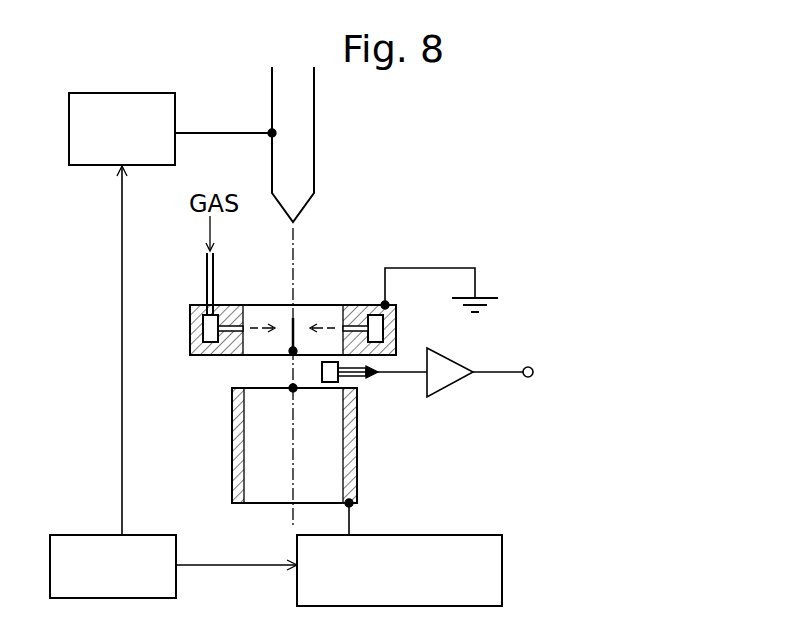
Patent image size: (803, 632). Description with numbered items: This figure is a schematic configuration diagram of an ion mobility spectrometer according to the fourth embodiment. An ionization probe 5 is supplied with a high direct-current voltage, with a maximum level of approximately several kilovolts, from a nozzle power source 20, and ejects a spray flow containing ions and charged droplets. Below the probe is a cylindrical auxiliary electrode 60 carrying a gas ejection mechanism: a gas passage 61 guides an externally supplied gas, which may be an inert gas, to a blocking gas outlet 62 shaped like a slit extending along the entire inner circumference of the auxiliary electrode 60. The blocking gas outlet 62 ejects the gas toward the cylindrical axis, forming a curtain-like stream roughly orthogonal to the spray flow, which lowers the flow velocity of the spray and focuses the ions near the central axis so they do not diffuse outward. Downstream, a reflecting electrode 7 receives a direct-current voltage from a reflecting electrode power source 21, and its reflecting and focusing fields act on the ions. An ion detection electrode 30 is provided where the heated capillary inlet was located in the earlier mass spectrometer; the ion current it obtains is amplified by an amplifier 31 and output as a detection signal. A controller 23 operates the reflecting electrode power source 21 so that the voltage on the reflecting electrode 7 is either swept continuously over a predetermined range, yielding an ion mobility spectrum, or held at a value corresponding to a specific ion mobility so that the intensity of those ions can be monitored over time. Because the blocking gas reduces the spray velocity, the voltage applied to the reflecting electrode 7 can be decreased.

The ionization probe 5 is at (316, 166).
The reflecting electrode 7 is at (231, 440).
The nozzle power source 20 is at (150, 93).
The reflecting electrode power source 21 is at (504, 555).
The controller 23 is at (50, 560).
The ion detection electrode 30 is at (340, 382).
The amplifier 31 is at (450, 386).
The auxiliary electrode 60 is at (190, 330).
The gas passage 61 is at (227, 318).
The blocking gas outlet 62 is at (266, 326).